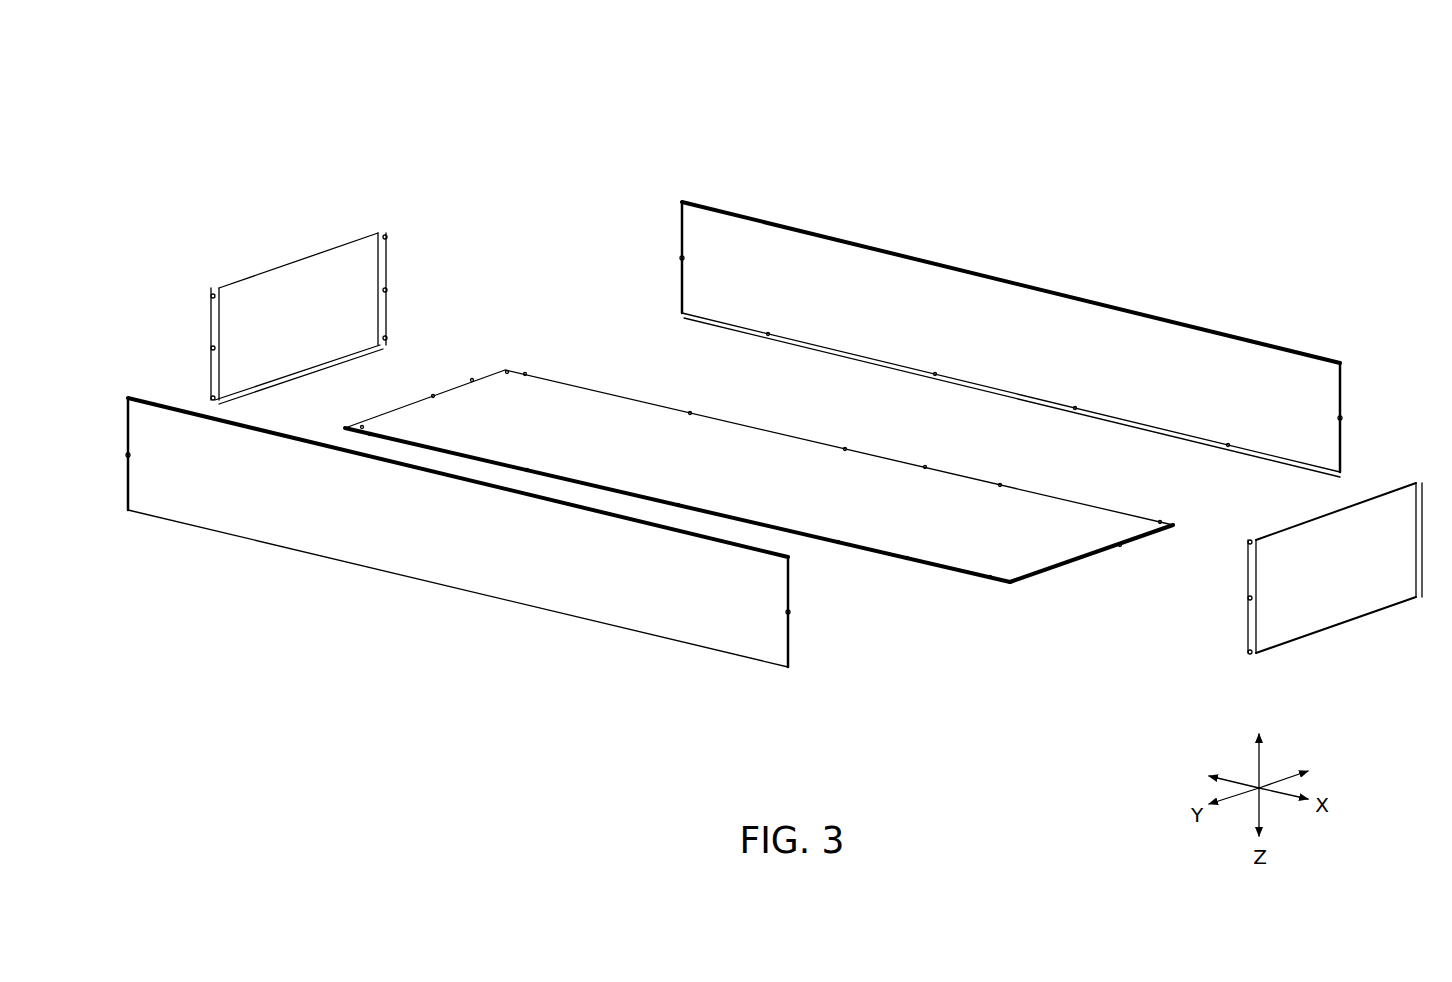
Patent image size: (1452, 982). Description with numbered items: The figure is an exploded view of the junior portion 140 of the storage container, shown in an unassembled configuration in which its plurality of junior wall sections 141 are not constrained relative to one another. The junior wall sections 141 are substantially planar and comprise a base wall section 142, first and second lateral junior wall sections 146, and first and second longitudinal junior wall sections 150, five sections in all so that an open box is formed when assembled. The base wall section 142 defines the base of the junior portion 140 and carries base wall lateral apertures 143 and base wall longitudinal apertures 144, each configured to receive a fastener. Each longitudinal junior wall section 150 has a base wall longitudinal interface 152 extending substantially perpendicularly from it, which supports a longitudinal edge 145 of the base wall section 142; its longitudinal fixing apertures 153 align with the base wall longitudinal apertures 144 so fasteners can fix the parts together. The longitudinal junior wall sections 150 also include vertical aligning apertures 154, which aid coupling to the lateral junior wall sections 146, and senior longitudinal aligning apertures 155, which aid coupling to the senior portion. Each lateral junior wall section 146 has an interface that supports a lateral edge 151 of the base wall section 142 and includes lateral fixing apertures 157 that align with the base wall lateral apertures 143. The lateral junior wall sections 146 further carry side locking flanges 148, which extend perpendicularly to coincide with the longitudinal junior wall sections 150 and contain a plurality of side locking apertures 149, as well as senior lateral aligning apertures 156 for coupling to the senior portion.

The junior portion 140 is at (805, 156).
The junior wall sections 141 is at (985, 148).
The base wall section 142 is at (970, 600).
The base wall lateral apertures 143 is at (1013, 586).
The base wall longitudinal apertures 144 is at (525, 374).
The longitudinal edge 145 is at (925, 467).
The first and second lateral junior wall sections 146 is at (233, 230).
The side locking flanges 148 is at (388, 245).
The side locking apertures 149 is at (380, 235).
The first and second longitudinal junior wall sections 150 is at (1304, 343).
The lateral edge 151 is at (472, 380).
The base wall longitudinal interface 152 is at (1308, 468).
The longitudinal fixing apertures 153 is at (768, 334).
The vertical aligning apertures 154 is at (682, 204).
The senior longitudinal aligning apertures 155 is at (810, 233).
The senior lateral aligning apertures 156 is at (218, 288).
The lateral fixing apertures 157 is at (380, 345).